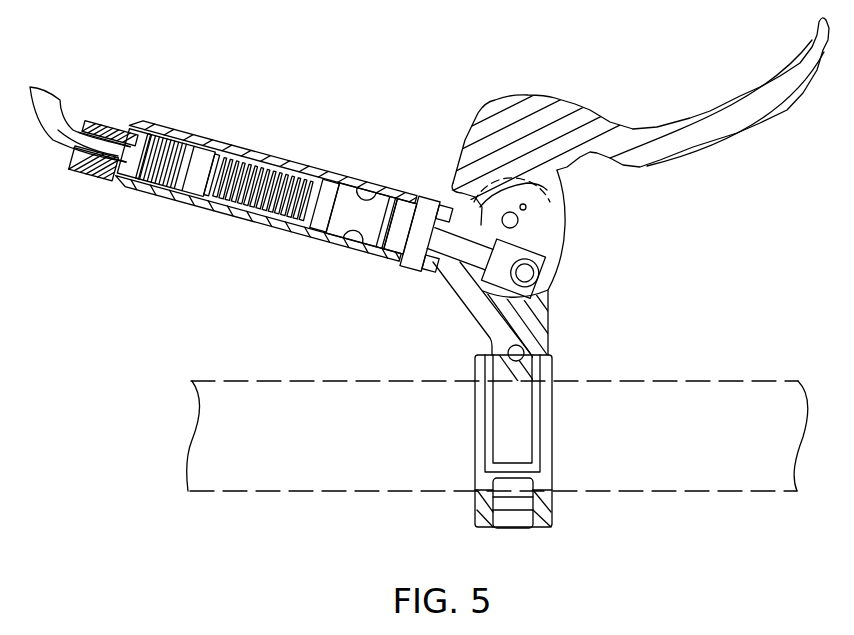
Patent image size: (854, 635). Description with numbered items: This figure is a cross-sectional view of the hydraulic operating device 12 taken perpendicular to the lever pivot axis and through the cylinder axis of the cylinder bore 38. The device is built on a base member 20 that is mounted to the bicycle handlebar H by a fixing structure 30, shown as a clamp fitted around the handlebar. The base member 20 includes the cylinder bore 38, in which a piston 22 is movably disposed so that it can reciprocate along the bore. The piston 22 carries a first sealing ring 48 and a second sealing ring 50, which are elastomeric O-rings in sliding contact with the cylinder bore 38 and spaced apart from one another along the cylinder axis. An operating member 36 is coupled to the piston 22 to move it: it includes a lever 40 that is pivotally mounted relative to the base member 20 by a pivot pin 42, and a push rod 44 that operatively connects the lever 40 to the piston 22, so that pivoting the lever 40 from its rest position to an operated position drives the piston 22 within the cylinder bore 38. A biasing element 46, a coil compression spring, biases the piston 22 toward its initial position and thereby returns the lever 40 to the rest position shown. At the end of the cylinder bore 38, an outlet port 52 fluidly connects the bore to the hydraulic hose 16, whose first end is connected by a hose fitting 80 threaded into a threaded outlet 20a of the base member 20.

The hydraulic operating device 12 is at (313, 108).
The hydraulic hose 16 is at (64, 110).
The base member 20 is at (265, 189).
The threaded outlet 20a is at (110, 151).
The piston 22 is at (362, 216).
The fixing structure 30 is at (547, 535).
The operating member 36 is at (492, 84).
The cylinder bore 38 is at (417, 233).
The lever 40 is at (701, 110).
The pivot pin 42 is at (518, 219).
The push rod 44 is at (457, 272).
The biasing element 46 is at (263, 188).
The first sealing ring 48 is at (325, 205).
The second sealing ring 50 is at (385, 223).
The outlet port 52 is at (212, 175).
The hose fitting 80 is at (176, 165).
The bicycle handlebar H is at (263, 496).